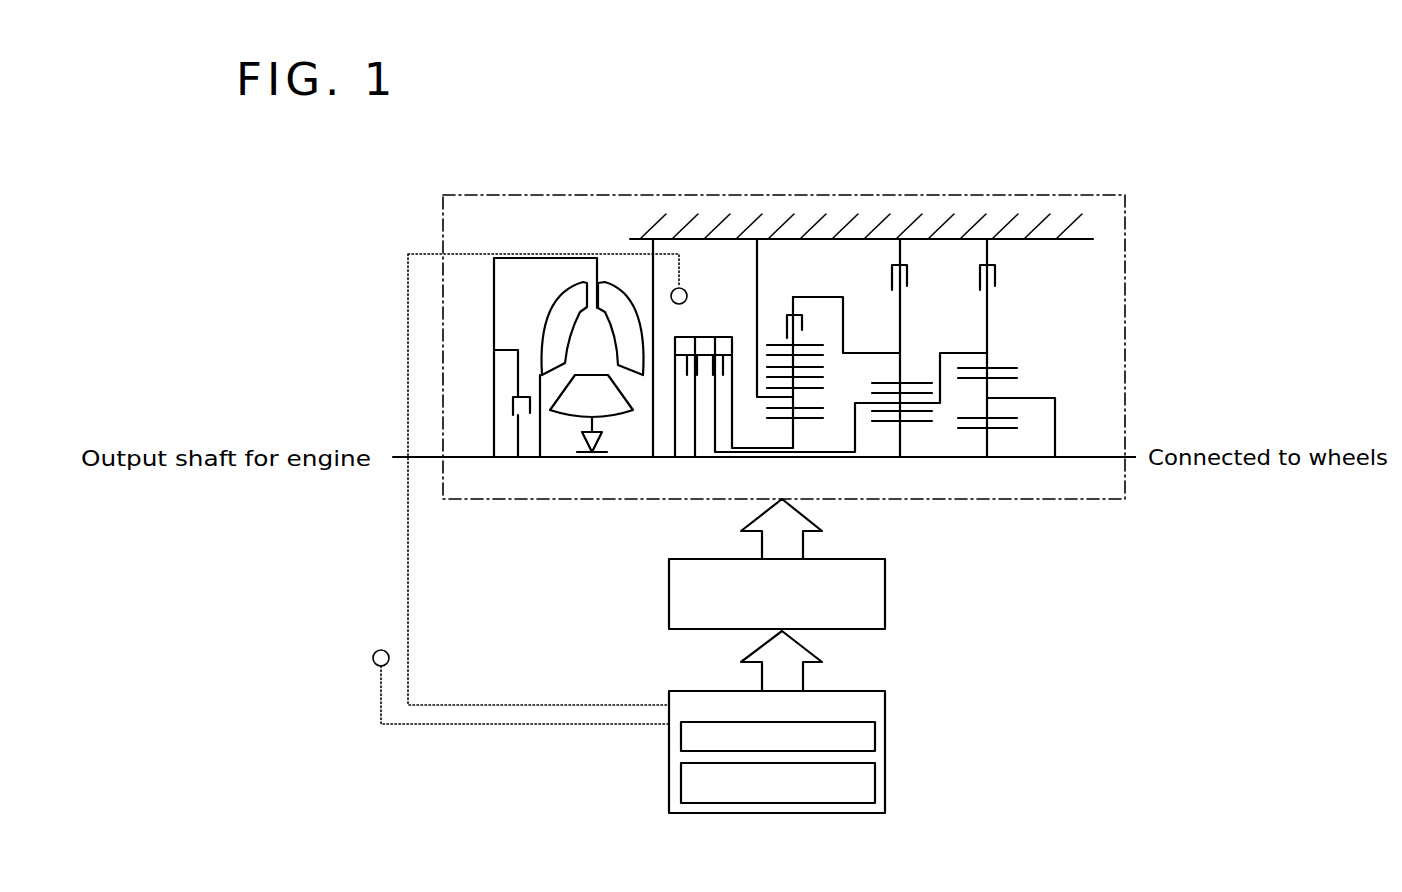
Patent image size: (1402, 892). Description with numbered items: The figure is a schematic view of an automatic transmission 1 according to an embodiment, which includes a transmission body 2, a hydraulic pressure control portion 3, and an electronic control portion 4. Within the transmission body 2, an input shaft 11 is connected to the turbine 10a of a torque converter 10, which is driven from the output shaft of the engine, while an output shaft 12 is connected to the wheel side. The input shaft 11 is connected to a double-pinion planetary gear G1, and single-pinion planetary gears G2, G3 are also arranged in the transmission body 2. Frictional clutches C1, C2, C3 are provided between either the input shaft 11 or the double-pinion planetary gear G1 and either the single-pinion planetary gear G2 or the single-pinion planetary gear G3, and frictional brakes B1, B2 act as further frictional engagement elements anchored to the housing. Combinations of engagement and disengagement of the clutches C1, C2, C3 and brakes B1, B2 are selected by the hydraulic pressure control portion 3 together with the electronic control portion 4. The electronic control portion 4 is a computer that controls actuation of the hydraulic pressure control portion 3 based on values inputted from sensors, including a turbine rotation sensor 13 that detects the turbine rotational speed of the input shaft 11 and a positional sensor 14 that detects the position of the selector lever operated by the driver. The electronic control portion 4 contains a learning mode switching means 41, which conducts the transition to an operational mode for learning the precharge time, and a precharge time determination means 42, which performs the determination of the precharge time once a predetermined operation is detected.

The automatic transmission 1 is at (1157, 192).
The transmission body 2 is at (1113, 275).
The hydraulic pressure control portion 3 is at (873, 568).
The electronic control portion 4 is at (873, 700).
The learning mode switching means 41 is at (865, 733).
The precharge time determination means 42 is at (865, 773).
The torque converter 10 is at (573, 348).
The turbine 10a is at (555, 306).
The input shaft 11 is at (545, 458).
The output shaft 12 is at (1063, 456).
The turbine rotation sensor 13 is at (688, 293).
The positional sensor 14 is at (390, 657).
The frictional clutch C1 is at (676, 351).
The frictional clutch C2 is at (732, 351).
The frictional clutch C3 is at (805, 324).
The frictional brake B1 is at (912, 279).
The frictional brake B2 is at (997, 279).
The double-pinion planetary gear G1 is at (823, 383).
The single-pinion planetary gear G2 is at (917, 355).
The single-pinion planetary gear G3 is at (1012, 356).